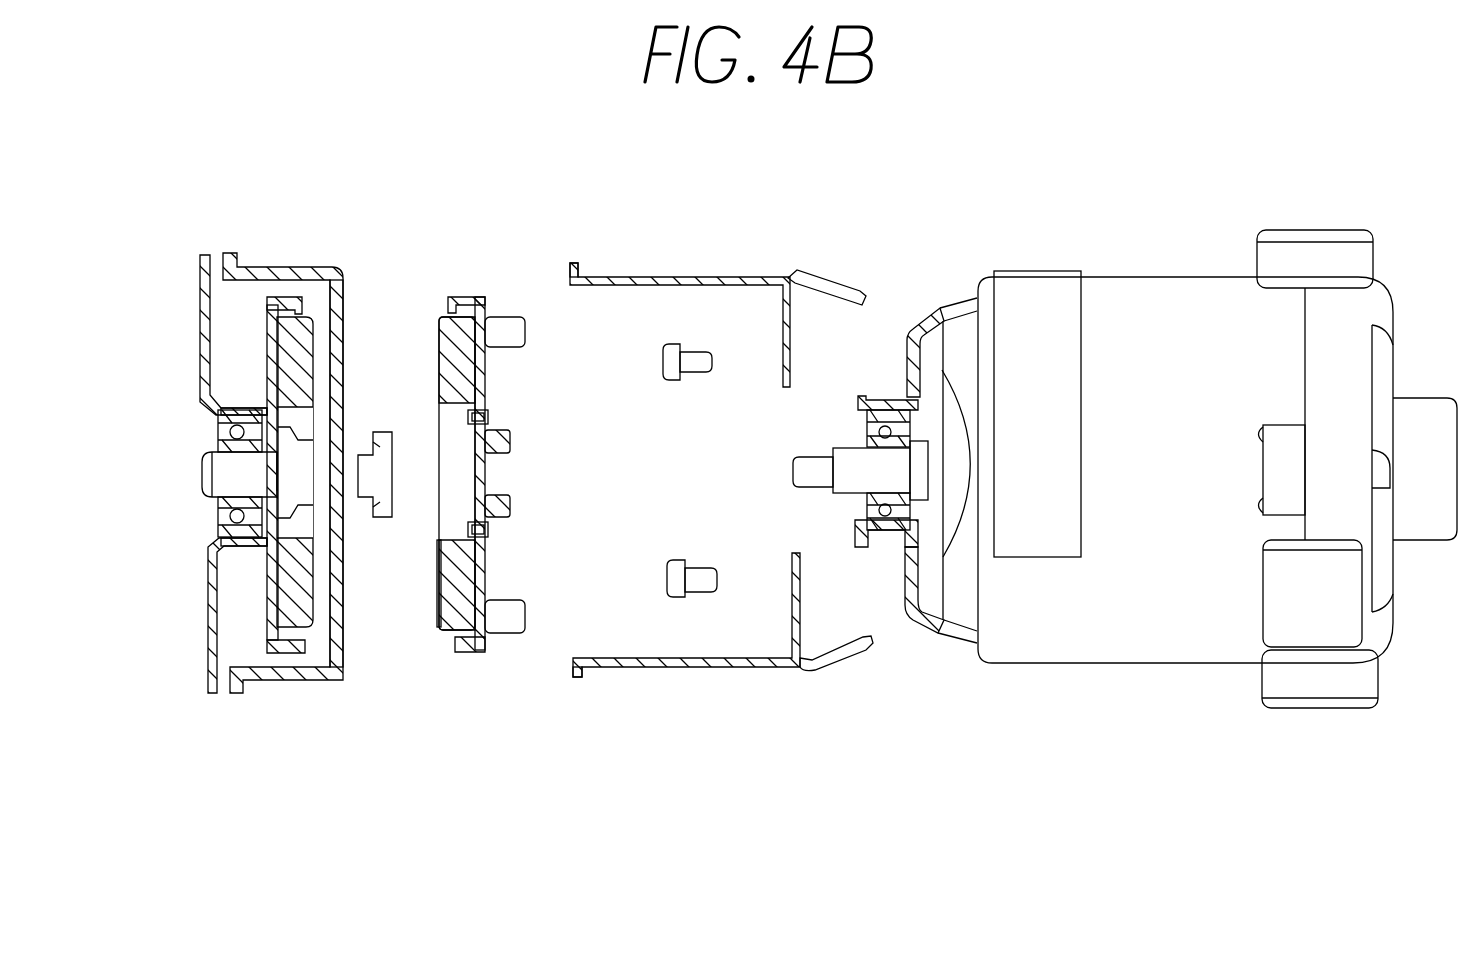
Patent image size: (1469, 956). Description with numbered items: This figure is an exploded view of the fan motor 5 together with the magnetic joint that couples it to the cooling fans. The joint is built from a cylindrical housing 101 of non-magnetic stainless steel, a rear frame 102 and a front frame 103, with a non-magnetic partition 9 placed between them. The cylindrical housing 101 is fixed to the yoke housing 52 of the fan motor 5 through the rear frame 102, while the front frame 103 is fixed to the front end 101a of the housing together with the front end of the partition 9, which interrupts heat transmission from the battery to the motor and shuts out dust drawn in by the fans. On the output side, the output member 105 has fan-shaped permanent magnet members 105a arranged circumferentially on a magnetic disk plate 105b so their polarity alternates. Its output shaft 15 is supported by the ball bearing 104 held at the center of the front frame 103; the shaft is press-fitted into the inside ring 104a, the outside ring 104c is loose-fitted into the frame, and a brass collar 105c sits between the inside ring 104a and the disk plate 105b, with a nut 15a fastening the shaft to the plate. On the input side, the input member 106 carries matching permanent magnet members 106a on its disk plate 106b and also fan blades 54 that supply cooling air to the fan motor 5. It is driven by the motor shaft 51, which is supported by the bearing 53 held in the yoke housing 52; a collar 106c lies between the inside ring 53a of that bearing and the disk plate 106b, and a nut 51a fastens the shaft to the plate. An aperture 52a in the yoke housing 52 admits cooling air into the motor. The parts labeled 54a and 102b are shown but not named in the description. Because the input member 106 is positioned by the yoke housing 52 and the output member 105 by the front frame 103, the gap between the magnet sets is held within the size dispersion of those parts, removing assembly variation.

The fan motor 5 is at (1140, 268).
The non-magnetic partition 9 is at (290, 265).
The output shaft 15 is at (215, 460).
The nut 15a is at (308, 445).
The motor shaft 51 is at (815, 480).
The nut 51a is at (378, 430).
The yoke housing 52 is at (947, 302).
The aperture 52a is at (908, 328).
The bearing 53 is at (852, 418).
The inside ring 53a is at (862, 432).
The fan blades 54 is at (503, 325).
The clip 54a is at (488, 412).
The cylindrical housing 101 is at (695, 277).
The front end 101a is at (578, 270).
The rear frame 102 is at (805, 276).
The screw 102b is at (668, 343).
The front frame 103 is at (200, 337).
The ball bearing 104 is at (216, 513).
The inside ring 104a is at (222, 496).
The outside ring 104c is at (215, 528).
The output member 105 is at (268, 632).
The fan-shaped permanent magnet members 105a is at (336, 612).
The disk plate 105b is at (278, 600).
The brass collar 105c is at (268, 590).
The input member 106 is at (443, 636).
The fan-shaped permanent magnet members 106a is at (428, 592).
The disk plate 106b is at (470, 630).
The collar 106c is at (497, 515).